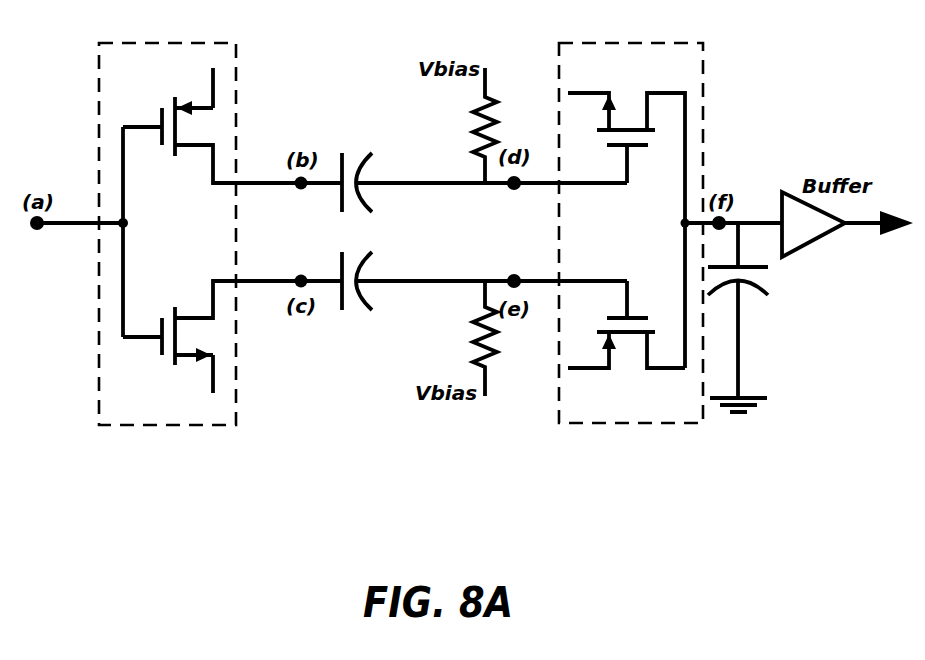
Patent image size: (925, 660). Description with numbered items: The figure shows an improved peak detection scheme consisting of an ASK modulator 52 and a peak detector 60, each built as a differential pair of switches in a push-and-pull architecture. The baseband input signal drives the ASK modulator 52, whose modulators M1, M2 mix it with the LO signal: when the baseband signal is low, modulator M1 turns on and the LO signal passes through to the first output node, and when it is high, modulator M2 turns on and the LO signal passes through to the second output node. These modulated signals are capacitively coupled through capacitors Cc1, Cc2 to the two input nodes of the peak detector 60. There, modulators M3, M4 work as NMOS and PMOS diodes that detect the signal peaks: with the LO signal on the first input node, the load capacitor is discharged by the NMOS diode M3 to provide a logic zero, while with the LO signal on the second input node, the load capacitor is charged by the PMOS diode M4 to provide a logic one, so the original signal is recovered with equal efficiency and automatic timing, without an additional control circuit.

The ASK modulator 52 is at (214, 266).
The peak detector 60 is at (637, 263).
The modulator M1 is at (232, 116).
The modulator M2 is at (232, 352).
The modulator M3 is at (625, 214).
The modulator M4 is at (626, 342).
The capacitor Cc1 is at (482, 170).
The capacitor Cc2 is at (482, 296).